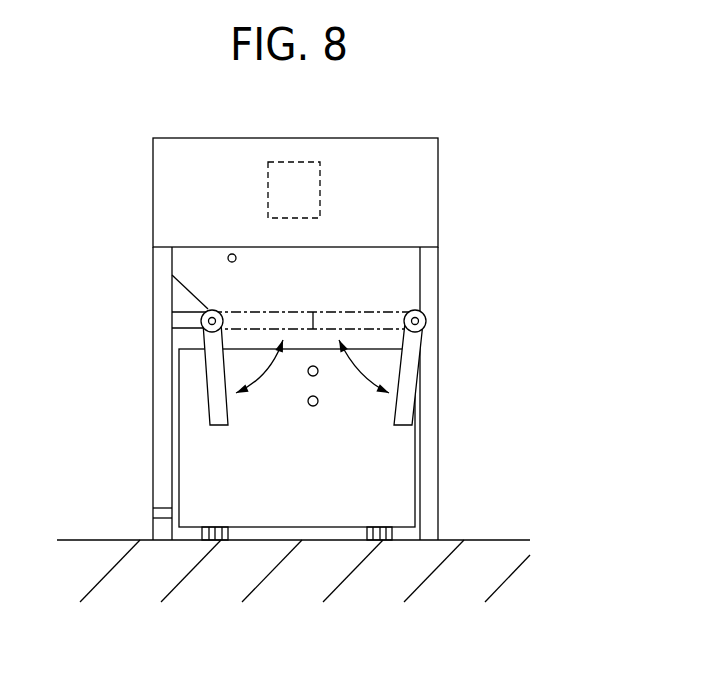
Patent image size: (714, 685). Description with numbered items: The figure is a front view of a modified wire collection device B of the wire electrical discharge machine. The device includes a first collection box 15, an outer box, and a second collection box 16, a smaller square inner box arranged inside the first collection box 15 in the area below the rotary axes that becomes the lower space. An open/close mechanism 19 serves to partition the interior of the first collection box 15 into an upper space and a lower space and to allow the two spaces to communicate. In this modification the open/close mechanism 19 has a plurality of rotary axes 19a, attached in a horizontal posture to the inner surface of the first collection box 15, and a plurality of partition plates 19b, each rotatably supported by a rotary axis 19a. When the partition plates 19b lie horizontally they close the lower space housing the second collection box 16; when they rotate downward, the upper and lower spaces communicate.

The wire collection device B is at (529, 143).
The first collection box 15 is at (455, 210).
The second collection box 16 is at (164, 386).
The open/close mechanism 19 is at (443, 403).
The rotary axis 19a is at (204, 313).
The partition plate 19b is at (257, 308).